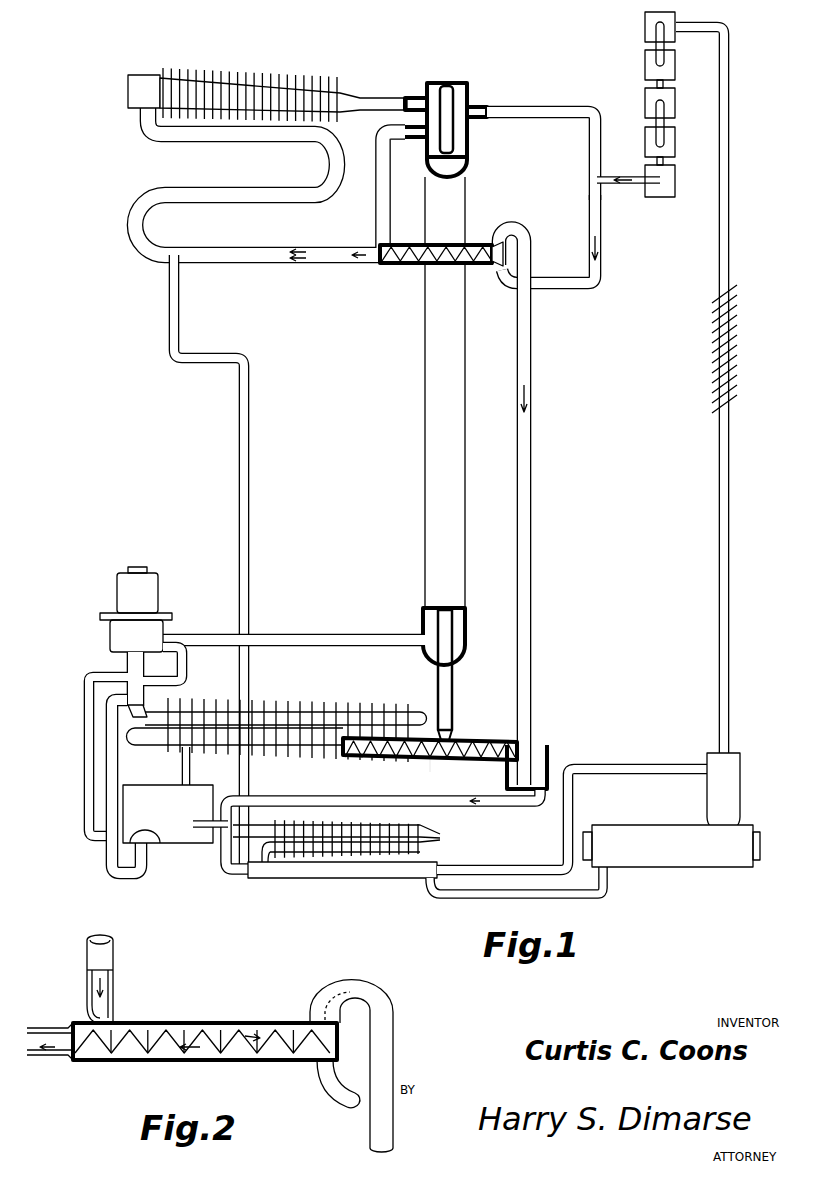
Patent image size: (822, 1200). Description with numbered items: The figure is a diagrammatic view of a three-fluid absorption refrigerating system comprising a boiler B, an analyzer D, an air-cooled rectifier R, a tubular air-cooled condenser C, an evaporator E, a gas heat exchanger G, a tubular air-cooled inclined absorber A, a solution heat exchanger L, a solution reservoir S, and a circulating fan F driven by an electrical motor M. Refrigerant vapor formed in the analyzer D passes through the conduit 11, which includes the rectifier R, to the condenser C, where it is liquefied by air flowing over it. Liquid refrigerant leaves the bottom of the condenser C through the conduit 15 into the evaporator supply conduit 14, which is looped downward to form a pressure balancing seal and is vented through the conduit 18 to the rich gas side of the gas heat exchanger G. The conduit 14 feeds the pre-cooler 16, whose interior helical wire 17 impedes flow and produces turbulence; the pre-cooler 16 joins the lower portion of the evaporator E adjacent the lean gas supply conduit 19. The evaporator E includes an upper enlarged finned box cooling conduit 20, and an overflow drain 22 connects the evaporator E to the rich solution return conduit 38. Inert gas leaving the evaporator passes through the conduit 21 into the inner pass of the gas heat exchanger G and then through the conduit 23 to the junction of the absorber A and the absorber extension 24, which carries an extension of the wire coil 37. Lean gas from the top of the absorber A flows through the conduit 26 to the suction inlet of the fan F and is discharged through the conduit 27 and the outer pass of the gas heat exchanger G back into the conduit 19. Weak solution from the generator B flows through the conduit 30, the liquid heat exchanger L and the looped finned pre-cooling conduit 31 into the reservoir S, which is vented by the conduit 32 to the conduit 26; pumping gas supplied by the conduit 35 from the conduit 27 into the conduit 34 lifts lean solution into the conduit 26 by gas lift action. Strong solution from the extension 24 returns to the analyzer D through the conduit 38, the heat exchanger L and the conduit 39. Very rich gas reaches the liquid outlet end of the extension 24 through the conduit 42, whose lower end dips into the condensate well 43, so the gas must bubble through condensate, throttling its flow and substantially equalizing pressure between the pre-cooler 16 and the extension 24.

In FIG. 1, the conduit 11 is at (730, 549).
In FIG. 1, the evaporator supply conduit 14 is at (600, 219).
In FIG. 2, the evaporator supply conduit 14 is at (320, 1101).
In FIG. 1, the conduit 15 is at (606, 178).
In FIG. 1, the pre-cooler conduit 16 is at (476, 242).
In FIG. 2, the pre-cooler conduit 16 is at (211, 1023).
In FIG. 1, the helical wire or ribbon 17 is at (490, 265).
In FIG. 2, the helical wire or ribbon 17 is at (265, 1053).
In FIG. 1, the vent conduit 18 is at (558, 108).
In FIG. 1, the lean gas supply conduit 19 is at (390, 222).
In FIG. 2, the lean gas supply conduit 19 is at (113, 970).
In FIG. 1, the finned box cooling conduit 20 is at (263, 80).
In FIG. 1, the conduit 21 is at (377, 94).
In FIG. 1, the overflow drain 22 is at (248, 519).
In FIG. 1, the conduit 23 is at (452, 686).
In FIG. 1, the absorber extension 24 is at (467, 740).
In FIG. 1, the suction inlet conduit 26 is at (127, 660).
In FIG. 1, the discharge conduit 27 is at (310, 634).
In FIG. 1, the conduit 30 is at (473, 898).
In FIG. 1, the looped finned pre-cooling conduit 31 is at (440, 834).
In FIG. 1, the vent conduit 32 is at (189, 768).
In FIG. 1, the conduit 34 is at (113, 769).
In FIG. 1, the pumping gas conduit 35 is at (85, 773).
In FIG. 1, the wire coil 37 is at (402, 760).
In FIG. 1, the rich solution return conduit 38 is at (457, 797).
In FIG. 1, the conduit 39 is at (616, 764).
In FIG. 1, the pre-cooler conduit 42 is at (531, 606).
In FIG. 2, the pre-cooler conduit 42 is at (385, 992).
In FIG. 1, the condensate well 43 is at (508, 780).
In FIG. 1, the evaporator E is at (138, 212).
In FIG. 1, the gas heat exchanger G is at (427, 409).
In FIG. 1, the tubular air-cooled condenser C is at (655, 58).
In FIG. 1, the air-cooled rectifier R is at (715, 347).
In FIG. 1, the electrical motor M is at (137, 590).
In FIG. 1, the circulating fan F is at (136, 632).
In FIG. 1, the tubular air-cooled inclined absorber A is at (318, 712).
In FIG. 1, the solution reservoir S is at (175, 814).
In FIG. 1, the solution heat exchanger L is at (360, 879).
In FIG. 1, the boiler B is at (671, 846).
In FIG. 1, the analyzer D is at (723, 793).